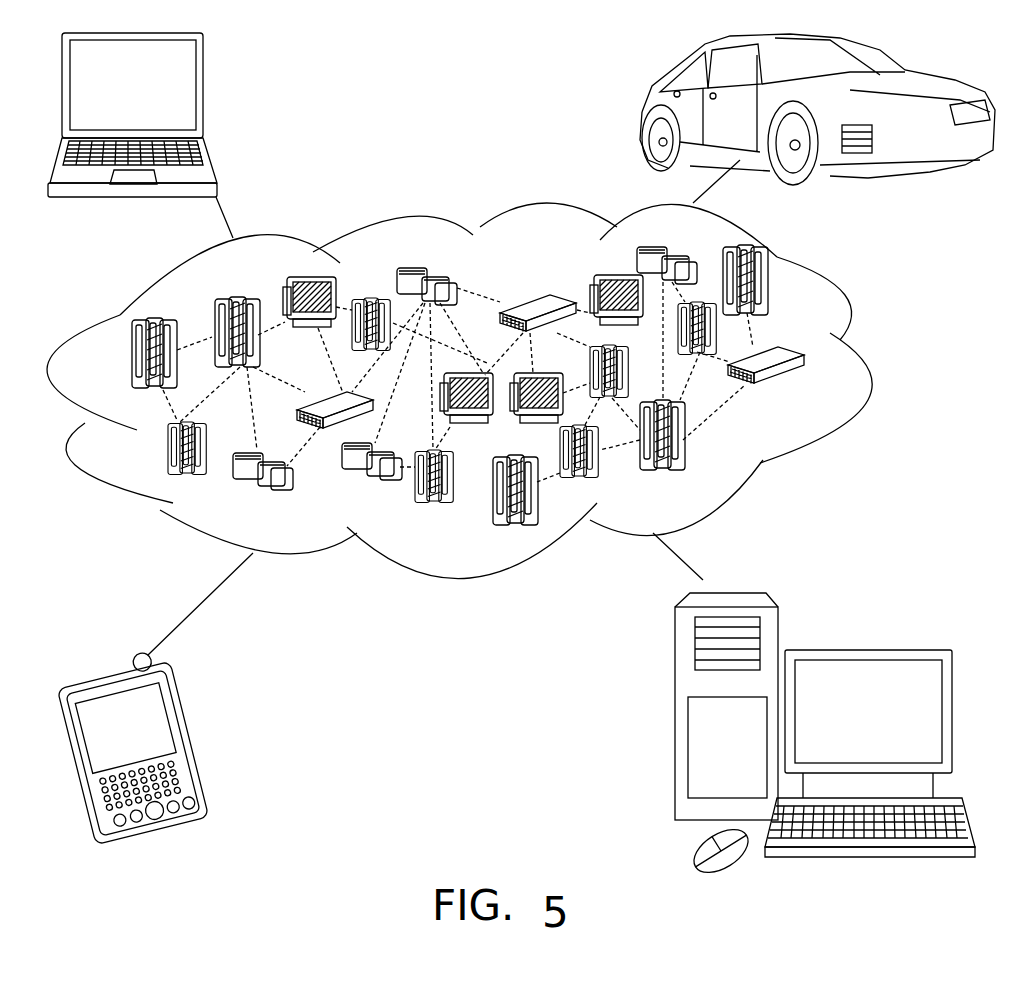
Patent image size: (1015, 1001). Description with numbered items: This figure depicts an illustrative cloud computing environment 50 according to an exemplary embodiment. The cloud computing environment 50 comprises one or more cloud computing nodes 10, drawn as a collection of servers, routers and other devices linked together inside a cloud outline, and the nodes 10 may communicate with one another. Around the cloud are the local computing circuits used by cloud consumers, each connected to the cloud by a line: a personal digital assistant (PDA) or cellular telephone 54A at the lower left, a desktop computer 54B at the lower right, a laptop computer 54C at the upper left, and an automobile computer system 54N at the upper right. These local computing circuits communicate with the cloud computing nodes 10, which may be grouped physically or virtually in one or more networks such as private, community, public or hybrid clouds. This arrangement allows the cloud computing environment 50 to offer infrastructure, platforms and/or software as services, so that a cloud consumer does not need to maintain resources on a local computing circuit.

The cloud computing node 10 is at (812, 395).
The cloud computing environment 50 is at (867, 367).
The personal digital assistant (PDA) or cellular telephone 54A is at (192, 743).
The desktop computer 54B is at (865, 647).
The laptop computer 54C is at (203, 95).
The automobile computer system 54N is at (645, 110).